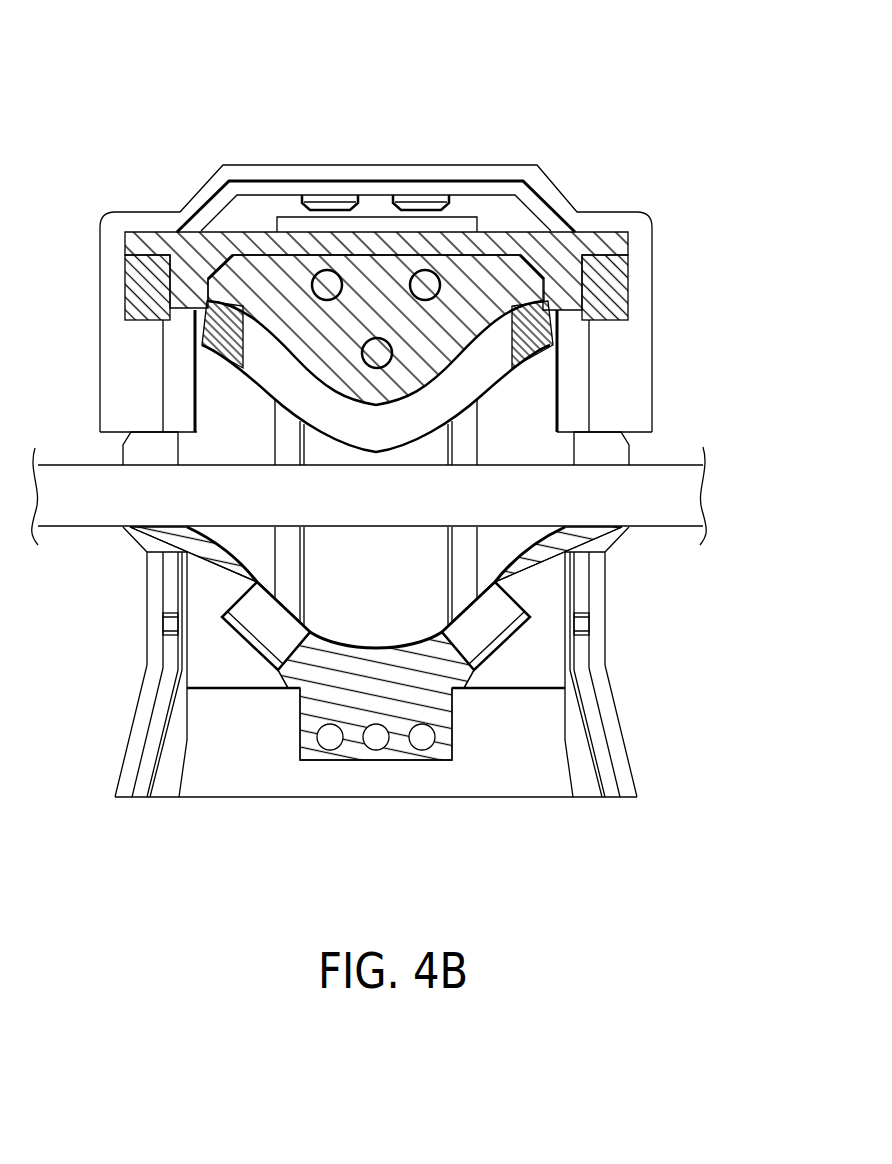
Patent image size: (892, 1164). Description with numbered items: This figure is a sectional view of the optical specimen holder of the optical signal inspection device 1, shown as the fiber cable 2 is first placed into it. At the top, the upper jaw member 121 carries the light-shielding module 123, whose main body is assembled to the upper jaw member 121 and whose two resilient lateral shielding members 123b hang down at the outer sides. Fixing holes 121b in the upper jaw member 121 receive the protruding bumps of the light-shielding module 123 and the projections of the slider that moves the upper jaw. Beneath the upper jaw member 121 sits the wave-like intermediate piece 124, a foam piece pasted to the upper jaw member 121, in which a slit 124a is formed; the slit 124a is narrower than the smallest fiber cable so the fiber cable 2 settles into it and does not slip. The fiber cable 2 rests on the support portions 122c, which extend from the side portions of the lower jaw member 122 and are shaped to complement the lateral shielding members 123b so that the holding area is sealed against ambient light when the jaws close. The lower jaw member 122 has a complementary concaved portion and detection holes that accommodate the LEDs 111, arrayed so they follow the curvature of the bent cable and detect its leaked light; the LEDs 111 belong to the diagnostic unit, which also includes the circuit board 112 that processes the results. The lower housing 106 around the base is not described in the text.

The optical signal inspection device 1 is at (144, 42).
The fiber cable 2 is at (70, 483).
The lower housing 106 is at (607, 692).
The light-emitting diodes 111 is at (257, 634).
The circuit board 112 is at (265, 782).
The upper jaw member 121 is at (289, 285).
The fixing holes 121b is at (420, 278).
The lower jaw member 122 is at (400, 745).
The support portions 122c is at (150, 442).
The light-shielding module 123 is at (568, 250).
The lateral shielding members 123b is at (138, 287).
The intermediate piece 124 is at (560, 330).
The slit 124a is at (476, 368).